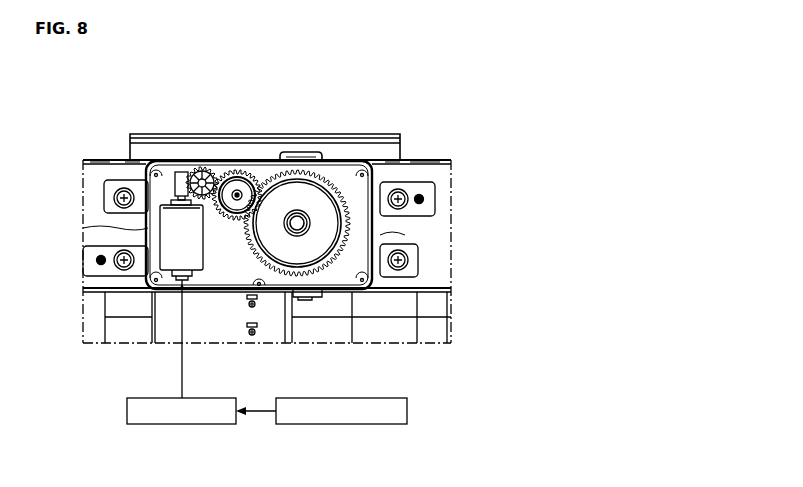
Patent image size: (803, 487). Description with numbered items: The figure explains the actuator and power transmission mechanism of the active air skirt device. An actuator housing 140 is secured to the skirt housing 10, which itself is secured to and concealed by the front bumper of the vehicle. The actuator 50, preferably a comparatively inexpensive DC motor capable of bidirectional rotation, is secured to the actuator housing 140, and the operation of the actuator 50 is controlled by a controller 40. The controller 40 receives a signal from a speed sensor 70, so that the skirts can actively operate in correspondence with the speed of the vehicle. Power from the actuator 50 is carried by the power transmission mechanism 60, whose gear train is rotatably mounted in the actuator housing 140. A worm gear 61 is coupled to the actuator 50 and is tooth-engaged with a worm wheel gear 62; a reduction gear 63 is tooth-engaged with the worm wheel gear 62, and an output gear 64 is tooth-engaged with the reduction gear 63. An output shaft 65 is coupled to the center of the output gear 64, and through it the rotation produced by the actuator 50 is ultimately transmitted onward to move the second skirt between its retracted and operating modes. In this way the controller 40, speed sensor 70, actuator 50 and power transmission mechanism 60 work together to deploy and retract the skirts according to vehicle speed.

The skirt housing 10 is at (437, 235).
The controller 40 is at (127, 411).
The actuator 50 is at (168, 229).
The power transmission mechanism 60 is at (325, 161).
The worm gear 61 is at (183, 165).
The worm wheel gear 62 is at (200, 165).
The reduction gear 63 is at (247, 162).
The output gear 64 is at (301, 160).
The output shaft 65 is at (301, 228).
The speed sensor 70 is at (407, 411).
The actuator housing 140 is at (352, 161).